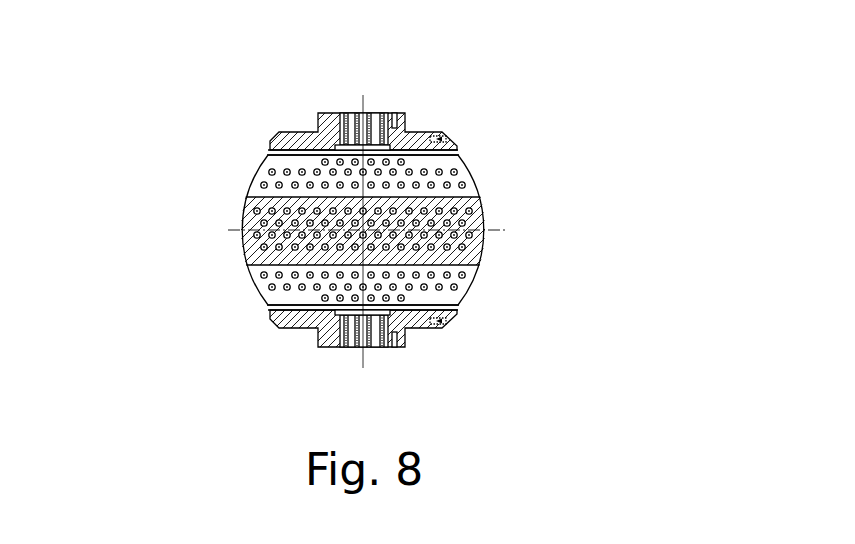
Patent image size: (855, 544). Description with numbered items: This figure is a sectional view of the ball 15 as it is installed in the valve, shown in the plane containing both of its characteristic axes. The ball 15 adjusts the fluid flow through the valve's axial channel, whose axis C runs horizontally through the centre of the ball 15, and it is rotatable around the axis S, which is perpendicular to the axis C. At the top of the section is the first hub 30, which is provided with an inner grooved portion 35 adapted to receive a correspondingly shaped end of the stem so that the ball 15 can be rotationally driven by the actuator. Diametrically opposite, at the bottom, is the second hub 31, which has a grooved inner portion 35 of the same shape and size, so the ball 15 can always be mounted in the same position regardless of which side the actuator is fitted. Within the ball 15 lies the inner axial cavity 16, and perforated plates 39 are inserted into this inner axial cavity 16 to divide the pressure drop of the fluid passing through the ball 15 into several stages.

The ball 15 is at (333, 214).
The inner axial cavity 16 is at (185, 237).
The first hub 30 is at (318, 125).
The second hub 31 is at (408, 337).
The inner grooved portion 35 is at (377, 117).
The perforated plates 39 is at (463, 175).
The axis S is at (353, 98).
The axis C is at (493, 233).